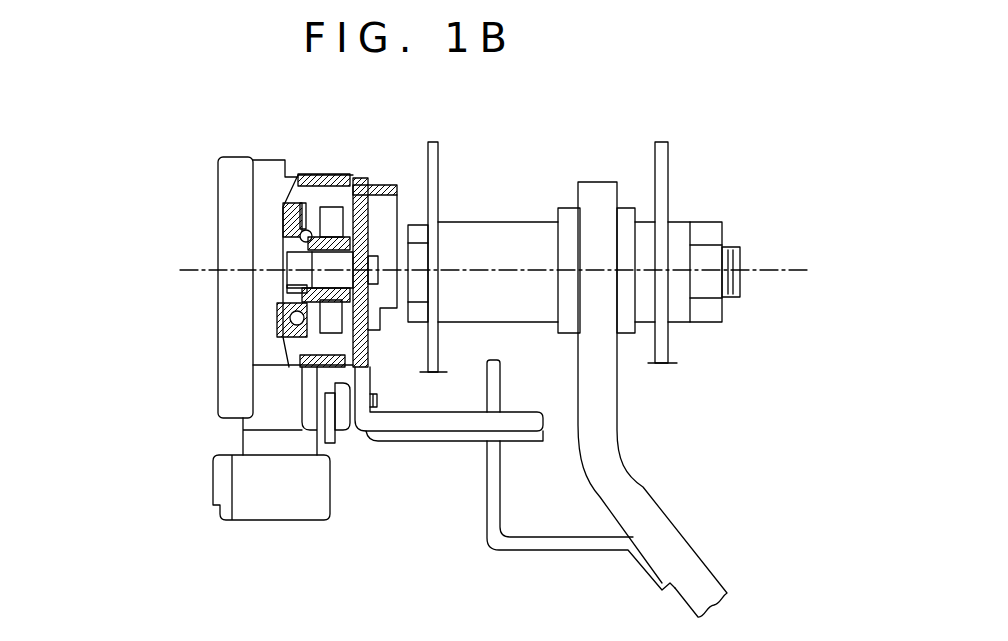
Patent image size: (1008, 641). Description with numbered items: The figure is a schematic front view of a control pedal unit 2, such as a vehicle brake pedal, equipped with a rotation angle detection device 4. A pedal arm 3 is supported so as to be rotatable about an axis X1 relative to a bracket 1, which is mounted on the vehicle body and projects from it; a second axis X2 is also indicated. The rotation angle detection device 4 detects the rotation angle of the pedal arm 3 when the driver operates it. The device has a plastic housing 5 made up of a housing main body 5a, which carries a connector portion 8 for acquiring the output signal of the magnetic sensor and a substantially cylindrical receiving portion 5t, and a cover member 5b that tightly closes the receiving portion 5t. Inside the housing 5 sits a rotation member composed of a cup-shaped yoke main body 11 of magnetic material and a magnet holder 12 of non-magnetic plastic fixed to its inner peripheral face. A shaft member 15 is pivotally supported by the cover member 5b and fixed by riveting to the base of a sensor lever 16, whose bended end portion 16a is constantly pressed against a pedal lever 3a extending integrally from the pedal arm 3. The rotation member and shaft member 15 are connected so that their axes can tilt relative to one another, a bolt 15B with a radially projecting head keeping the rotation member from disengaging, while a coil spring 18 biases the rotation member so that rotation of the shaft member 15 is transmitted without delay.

The bracket 1 is at (440, 178).
The control pedal unit 2 is at (694, 200).
The pedal arm 3 is at (620, 396).
The pedal lever 3a is at (487, 480).
The rotation angle detection device 4 is at (136, 171).
The housing 5 is at (220, 170).
The housing main body 5a is at (217, 360).
The cover member 5b is at (365, 183).
The receiving portion 5t is at (300, 172).
The connector portion 8 is at (270, 507).
The yoke main body 11 is at (283, 313).
The magnet holder 12 is at (283, 222).
The shaft member 15 is at (283, 262).
The bolt 15B is at (280, 283).
The sensor lever 16 is at (370, 355).
The bended end portion 16a is at (440, 443).
The coil spring 18 is at (308, 204).
The axis X1 is at (185, 268).
The second axis X2 is at (770, 273).